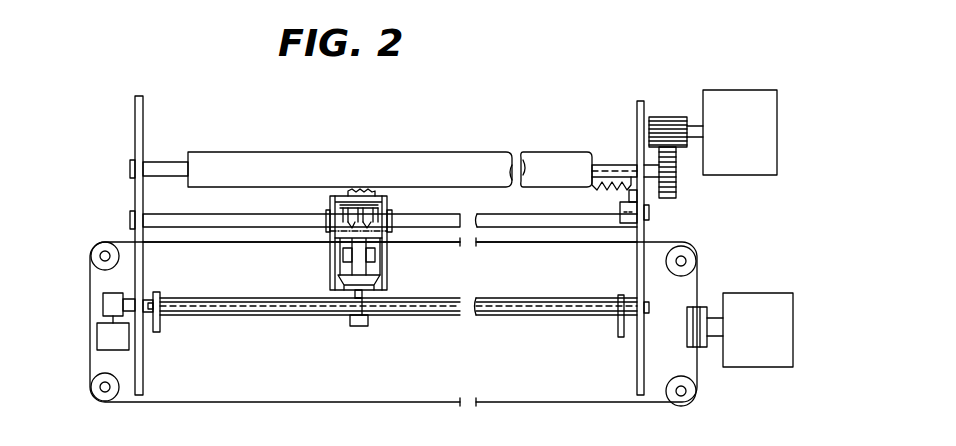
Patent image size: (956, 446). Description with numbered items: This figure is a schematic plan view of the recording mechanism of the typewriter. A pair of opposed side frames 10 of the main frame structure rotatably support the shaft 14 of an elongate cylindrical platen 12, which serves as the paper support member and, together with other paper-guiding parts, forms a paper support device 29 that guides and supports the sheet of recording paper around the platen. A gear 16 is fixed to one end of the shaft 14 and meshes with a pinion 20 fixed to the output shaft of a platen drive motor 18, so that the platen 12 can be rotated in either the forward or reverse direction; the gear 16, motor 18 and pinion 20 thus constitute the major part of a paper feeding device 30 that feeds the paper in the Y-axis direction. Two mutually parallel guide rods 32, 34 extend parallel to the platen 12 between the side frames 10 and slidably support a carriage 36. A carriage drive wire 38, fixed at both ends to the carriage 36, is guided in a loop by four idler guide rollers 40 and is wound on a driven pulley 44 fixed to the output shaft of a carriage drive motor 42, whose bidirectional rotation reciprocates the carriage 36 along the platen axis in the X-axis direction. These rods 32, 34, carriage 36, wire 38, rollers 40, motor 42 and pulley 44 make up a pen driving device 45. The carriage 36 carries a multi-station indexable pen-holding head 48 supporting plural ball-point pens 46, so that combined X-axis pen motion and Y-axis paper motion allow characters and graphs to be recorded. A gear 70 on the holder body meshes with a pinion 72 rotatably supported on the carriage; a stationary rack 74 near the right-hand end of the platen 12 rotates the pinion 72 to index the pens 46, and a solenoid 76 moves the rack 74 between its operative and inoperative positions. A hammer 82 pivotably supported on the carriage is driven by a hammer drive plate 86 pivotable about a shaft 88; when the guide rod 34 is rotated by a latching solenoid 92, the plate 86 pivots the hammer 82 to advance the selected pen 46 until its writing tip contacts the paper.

The side frames 10 is at (135, 101).
The platen 12 is at (270, 160).
The shaft 14 is at (167, 163).
The gear 16 is at (677, 188).
The platen drive motor 18 is at (765, 98).
The pinion 20 is at (675, 117).
The paper support device 29 is at (481, 142).
The paper feeding device 30 is at (728, 74).
The guide rod 32 is at (150, 212).
The guide rod 34 is at (150, 296).
The carriage 36 is at (335, 268).
The carriage drive wire 38 is at (238, 243).
The idler guide rollers 40 is at (91, 256).
The carriage drive motor 42 is at (784, 300).
The driven pulley 44 is at (687, 330).
The pen driving device 45 is at (751, 383).
The ball-point pens 46 is at (386, 268).
The pen-holding head 48 is at (406, 253).
The gear 70 is at (386, 222).
The pinion 72 is at (356, 190).
The stationary rack 74 is at (600, 172).
The solenoid 76 is at (632, 211).
The hammer 82 is at (366, 320).
The hammer drive plate 86 is at (557, 300).
The shaft 88 is at (180, 312).
The solenoid 92 is at (97, 342).